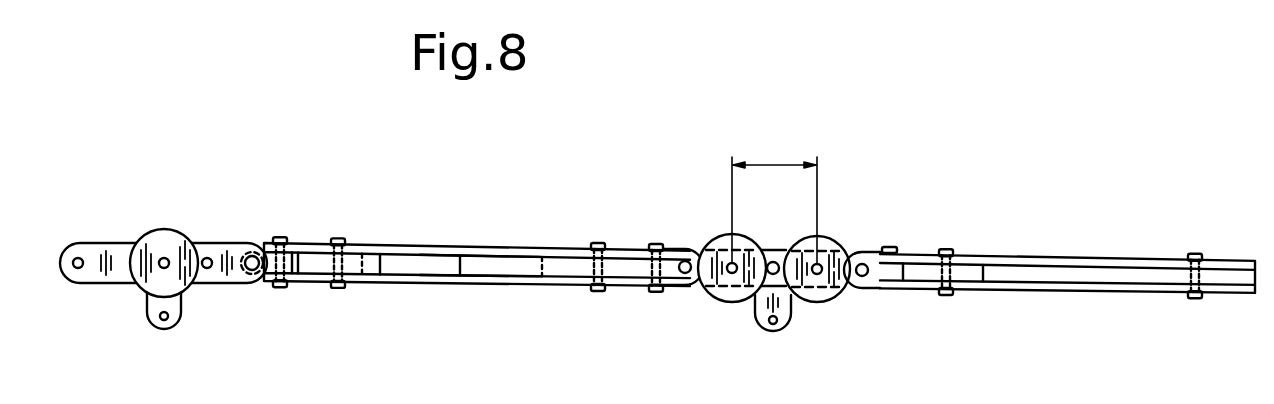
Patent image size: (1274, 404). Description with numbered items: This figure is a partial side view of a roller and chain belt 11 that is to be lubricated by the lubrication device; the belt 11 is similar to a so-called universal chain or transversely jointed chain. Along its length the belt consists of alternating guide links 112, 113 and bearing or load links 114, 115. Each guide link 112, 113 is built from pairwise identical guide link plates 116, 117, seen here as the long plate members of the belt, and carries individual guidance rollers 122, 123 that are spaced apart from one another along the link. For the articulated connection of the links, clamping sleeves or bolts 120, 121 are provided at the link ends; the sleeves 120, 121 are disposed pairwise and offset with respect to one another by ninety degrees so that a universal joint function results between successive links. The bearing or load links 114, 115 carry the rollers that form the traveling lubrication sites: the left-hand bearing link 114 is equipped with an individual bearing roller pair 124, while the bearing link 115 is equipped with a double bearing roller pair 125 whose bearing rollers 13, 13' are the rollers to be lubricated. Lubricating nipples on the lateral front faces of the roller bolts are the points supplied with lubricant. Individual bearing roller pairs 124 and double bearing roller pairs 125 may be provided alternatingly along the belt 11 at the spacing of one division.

The roller and chain belt 11 is at (1100, 214).
The bearing roller 13 is at (830, 244).
The bearing roller 13' is at (712, 294).
The guide link 112 is at (434, 227).
The guide link 113 is at (1048, 239).
The bearing or load link 114 is at (227, 228).
The bearing or load link 115 is at (766, 229).
The guide link plate 116 is at (482, 246).
The guide link plate 117 is at (483, 285).
The clamping sleeve or bolt 120 is at (658, 243).
The clamping sleeve or bolt 121 is at (687, 247).
The guidance roller 122 is at (363, 285).
The guidance roller 123 is at (563, 272).
The individual bearing roller pair 124 is at (203, 301).
The double bearing roller pair 125 is at (742, 319).